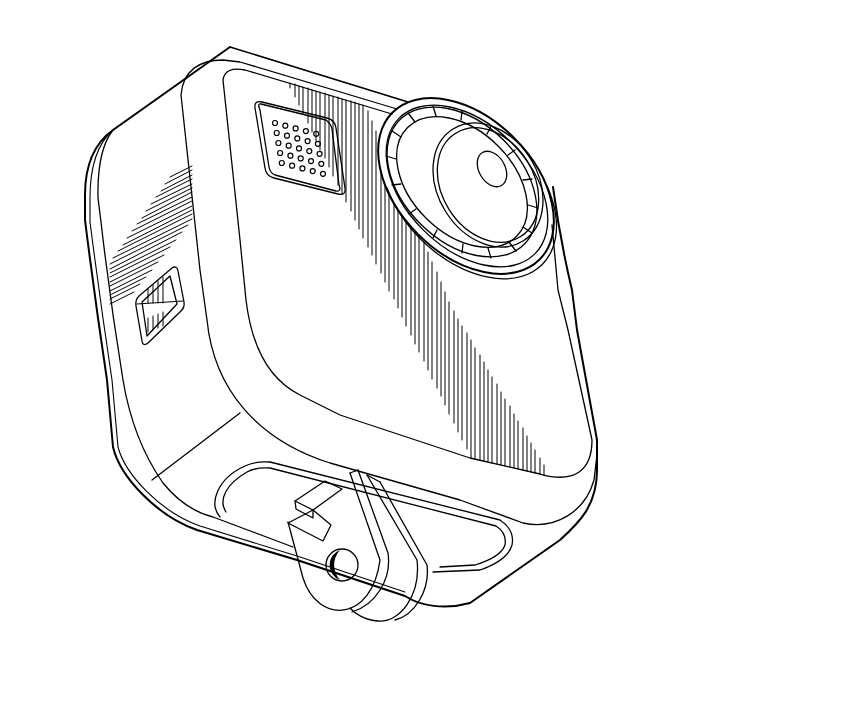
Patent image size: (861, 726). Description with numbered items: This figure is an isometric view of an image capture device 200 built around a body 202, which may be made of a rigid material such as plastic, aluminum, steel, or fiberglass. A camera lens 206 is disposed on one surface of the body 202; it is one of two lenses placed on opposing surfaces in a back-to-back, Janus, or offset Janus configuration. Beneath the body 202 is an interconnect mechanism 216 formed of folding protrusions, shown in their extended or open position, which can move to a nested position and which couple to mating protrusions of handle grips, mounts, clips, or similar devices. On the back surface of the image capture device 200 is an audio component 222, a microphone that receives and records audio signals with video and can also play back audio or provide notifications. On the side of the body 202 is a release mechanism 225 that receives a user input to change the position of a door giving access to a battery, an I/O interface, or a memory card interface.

The image capture device 200 is at (596, 112).
The body 202 is at (577, 330).
The camera lens 206 is at (492, 172).
The interconnect mechanism 216 is at (316, 556).
The audio component 222 is at (274, 120).
The release mechanism 225 is at (137, 310).